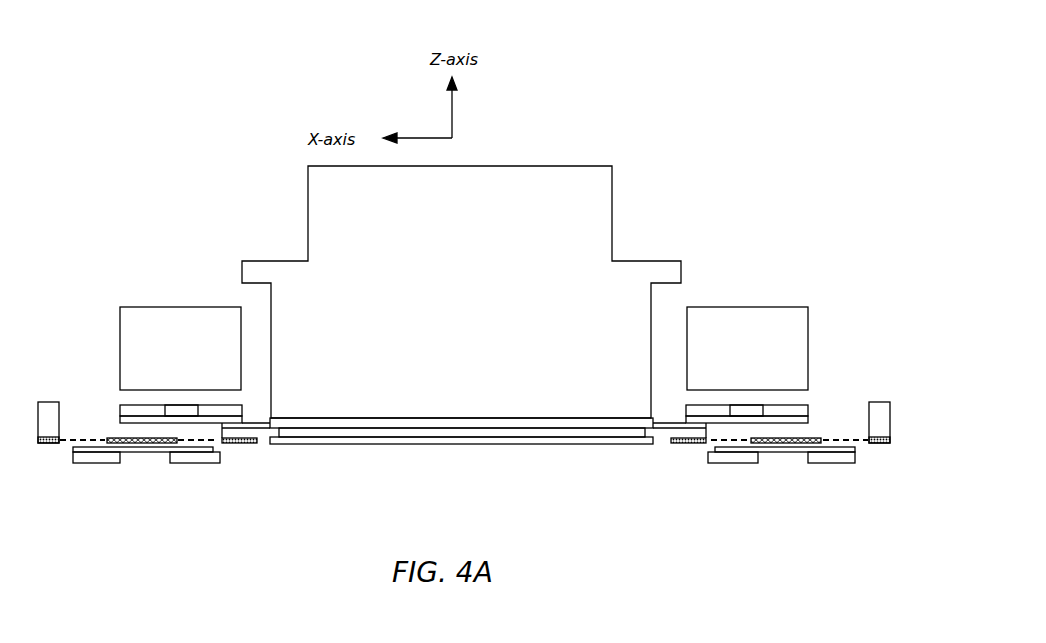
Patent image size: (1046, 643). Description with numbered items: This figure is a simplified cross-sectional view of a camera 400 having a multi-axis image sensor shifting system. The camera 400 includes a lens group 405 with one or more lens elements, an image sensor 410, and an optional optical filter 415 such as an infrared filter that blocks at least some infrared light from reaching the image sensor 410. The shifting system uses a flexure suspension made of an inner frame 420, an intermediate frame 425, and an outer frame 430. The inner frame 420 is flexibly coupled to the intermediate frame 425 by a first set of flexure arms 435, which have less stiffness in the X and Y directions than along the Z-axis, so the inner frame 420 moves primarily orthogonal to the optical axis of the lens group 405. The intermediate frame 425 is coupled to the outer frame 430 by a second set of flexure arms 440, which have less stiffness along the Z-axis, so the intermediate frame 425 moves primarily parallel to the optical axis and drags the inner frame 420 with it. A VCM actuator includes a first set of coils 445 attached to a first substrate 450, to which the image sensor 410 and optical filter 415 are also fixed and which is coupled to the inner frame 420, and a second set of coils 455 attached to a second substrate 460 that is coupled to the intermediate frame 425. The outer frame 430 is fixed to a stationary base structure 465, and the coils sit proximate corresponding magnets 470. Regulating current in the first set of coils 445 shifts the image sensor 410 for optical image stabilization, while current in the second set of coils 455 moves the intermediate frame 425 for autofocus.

The camera 400 is at (792, 64).
The lens group 405 is at (478, 313).
The image sensor 410 is at (430, 445).
The optical filter 415 is at (362, 418).
The inner frame 420 is at (243, 444).
The intermediate frame 425 is at (182, 462).
The outer frame 430 is at (55, 444).
The first set of flexure arms 435 is at (214, 441).
The second set of flexure arms 440 is at (858, 305).
The first set of coils 445 is at (163, 406).
The first substrate 450 is at (243, 424).
The second set of coils 455 is at (108, 548).
The second substrate 460 is at (197, 450).
The base structure 465 is at (888, 378).
The magnets 470 is at (765, 376).